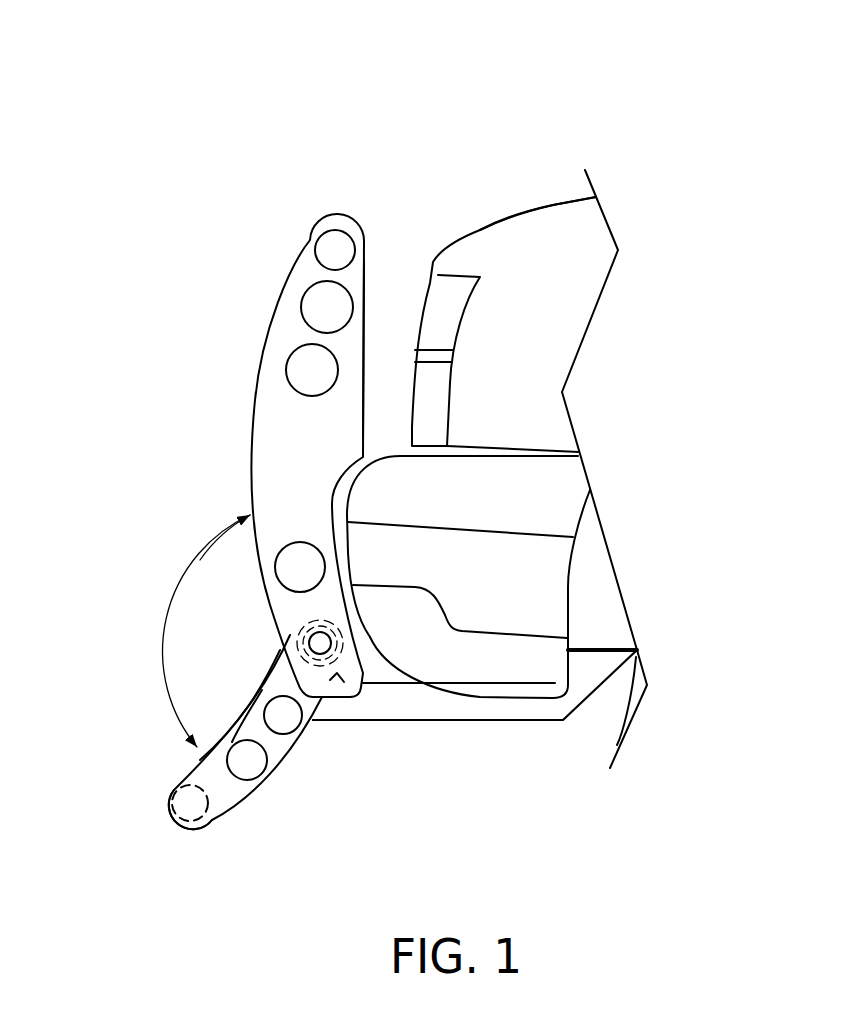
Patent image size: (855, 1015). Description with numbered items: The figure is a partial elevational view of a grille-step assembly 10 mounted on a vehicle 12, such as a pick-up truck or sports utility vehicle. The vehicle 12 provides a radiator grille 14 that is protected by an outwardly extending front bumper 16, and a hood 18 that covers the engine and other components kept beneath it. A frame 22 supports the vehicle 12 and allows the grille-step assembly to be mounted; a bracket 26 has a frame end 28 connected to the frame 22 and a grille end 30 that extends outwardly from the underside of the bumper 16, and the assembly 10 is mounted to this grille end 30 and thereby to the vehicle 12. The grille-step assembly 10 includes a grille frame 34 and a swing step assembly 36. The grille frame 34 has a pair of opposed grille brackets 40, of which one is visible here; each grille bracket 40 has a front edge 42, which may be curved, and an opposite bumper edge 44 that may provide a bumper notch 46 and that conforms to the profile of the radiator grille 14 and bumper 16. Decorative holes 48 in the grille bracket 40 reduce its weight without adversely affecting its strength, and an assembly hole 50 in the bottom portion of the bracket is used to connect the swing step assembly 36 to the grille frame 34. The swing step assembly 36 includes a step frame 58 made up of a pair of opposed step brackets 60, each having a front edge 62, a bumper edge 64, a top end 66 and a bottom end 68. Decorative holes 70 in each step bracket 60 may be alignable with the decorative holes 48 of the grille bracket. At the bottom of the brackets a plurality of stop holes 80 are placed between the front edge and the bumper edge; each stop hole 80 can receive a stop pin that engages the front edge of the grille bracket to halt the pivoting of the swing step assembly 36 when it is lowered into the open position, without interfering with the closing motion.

The grille-step assembly 10 is at (318, 117).
The vehicle 12 is at (609, 213).
The radiator grille 14 is at (438, 297).
The front bumper 16 is at (385, 658).
The hood 18 is at (553, 203).
The frame 22 is at (603, 638).
The bracket 26 is at (396, 726).
The frame end 28 is at (572, 697).
The grille end 30 is at (313, 700).
The grille frame 34 is at (284, 223).
The swing step assembly 36 is at (160, 788).
The grille bracket 40 is at (296, 264).
The front edge 42 is at (273, 323).
The bumper edge 44 is at (367, 320).
The bumper notch 46 is at (352, 467).
The decorative holes 48 is at (283, 392).
The assembly hole 50 is at (307, 650).
The step frame 58 is at (200, 757).
The step bracket 60 is at (190, 833).
The front edge 62 is at (240, 810).
The bumper edge 64 is at (232, 742).
The top end 66 is at (173, 820).
The bottom end 68 is at (323, 623).
The decorative holes 70 is at (290, 738).
The stop holes 80 is at (337, 673).